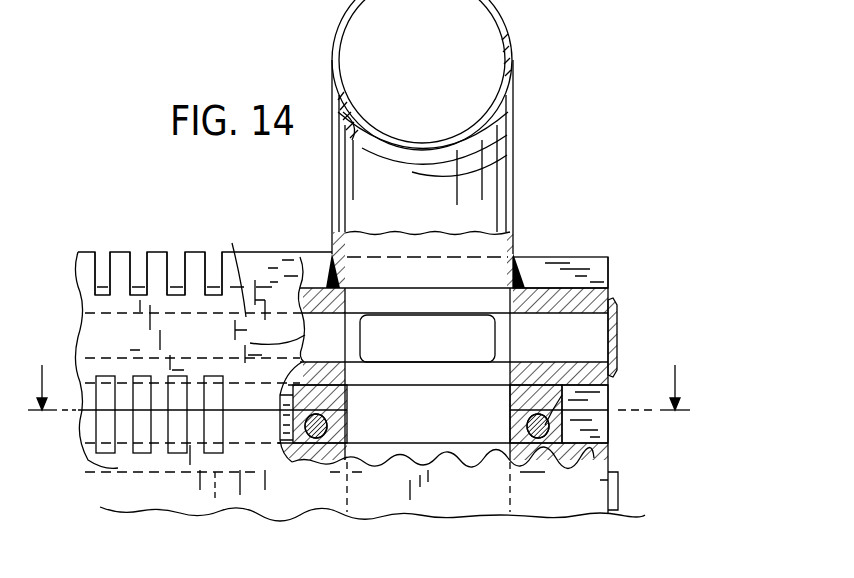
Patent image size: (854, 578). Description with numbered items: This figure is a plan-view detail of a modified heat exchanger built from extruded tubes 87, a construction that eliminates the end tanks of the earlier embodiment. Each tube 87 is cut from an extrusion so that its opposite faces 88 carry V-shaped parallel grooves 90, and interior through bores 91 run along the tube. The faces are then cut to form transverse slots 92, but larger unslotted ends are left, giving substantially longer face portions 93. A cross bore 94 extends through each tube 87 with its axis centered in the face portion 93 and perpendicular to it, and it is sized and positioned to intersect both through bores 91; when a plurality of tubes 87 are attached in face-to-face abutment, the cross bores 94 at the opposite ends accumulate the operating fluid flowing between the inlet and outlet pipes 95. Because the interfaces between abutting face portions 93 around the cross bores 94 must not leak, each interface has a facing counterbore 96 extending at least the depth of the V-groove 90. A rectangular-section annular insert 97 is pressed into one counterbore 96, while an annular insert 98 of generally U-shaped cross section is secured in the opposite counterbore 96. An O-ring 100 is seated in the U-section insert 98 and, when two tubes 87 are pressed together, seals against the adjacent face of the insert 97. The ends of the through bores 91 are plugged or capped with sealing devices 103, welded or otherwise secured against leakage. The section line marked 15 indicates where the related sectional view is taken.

The section line 15- 15 is at (359, 403).
The extruded tube 87 is at (183, 515).
The opposite faces 88 is at (157, 418).
The V-shaped parallel grooves 90 is at (282, 285).
The interior through bores 91 is at (226, 523).
The transverse slots 92 is at (175, 268).
The face portions 93 is at (616, 392).
The cross bore 94 is at (349, 498).
The inlet and outlet pipes 95 is at (513, 200).
The counterbore 96 is at (556, 398).
The annular insert 97 is at (535, 395).
The annular insert of U-shaped cross section 98 is at (332, 430).
The O-ring 100 is at (518, 412).
The sealing devices 103 is at (618, 325).